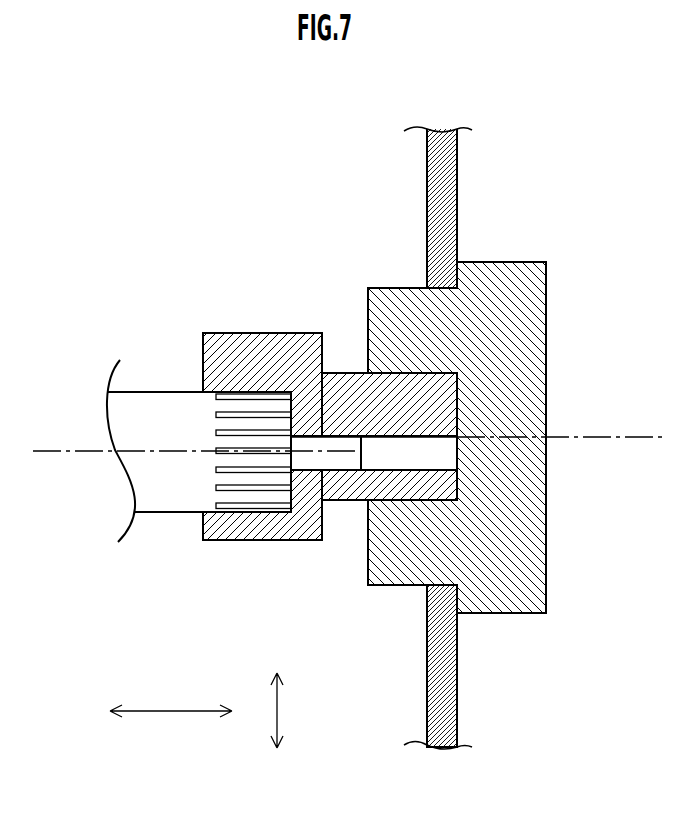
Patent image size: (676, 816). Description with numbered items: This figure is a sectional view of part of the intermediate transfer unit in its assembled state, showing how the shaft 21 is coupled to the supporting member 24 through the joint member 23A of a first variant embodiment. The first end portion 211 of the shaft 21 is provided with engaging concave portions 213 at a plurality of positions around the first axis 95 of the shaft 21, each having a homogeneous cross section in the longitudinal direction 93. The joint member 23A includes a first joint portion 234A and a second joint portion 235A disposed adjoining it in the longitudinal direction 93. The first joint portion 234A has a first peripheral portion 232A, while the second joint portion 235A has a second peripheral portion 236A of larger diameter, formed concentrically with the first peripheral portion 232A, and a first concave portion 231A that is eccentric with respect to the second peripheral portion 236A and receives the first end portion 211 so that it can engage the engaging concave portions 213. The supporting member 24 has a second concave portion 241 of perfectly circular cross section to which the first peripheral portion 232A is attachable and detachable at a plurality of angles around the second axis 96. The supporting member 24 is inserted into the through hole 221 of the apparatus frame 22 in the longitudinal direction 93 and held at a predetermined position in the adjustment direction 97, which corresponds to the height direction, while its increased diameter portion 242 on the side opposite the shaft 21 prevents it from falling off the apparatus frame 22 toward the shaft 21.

The shaft 21 is at (138, 400).
The first end portion 211 is at (153, 503).
The engaging concave portions 213 is at (216, 488).
The apparatus frame 22 is at (450, 438).
The through hole 221 is at (442, 601).
The joint member 23A is at (257, 409).
The first concave portion 231A is at (253, 527).
The first peripheral portion 232A is at (373, 358).
The first joint portion 234A is at (338, 375).
The second joint portion 235A is at (218, 342).
The second peripheral portion 236A is at (295, 333).
The supporting member 24 is at (490, 400).
The second concave portion 241 is at (472, 493).
The increased diameter portion 242 is at (503, 260).
The longitudinal direction 93 is at (171, 695).
The first axis 95 is at (60, 447).
The second axis 96 is at (640, 437).
The adjustment direction 97 is at (289, 710).